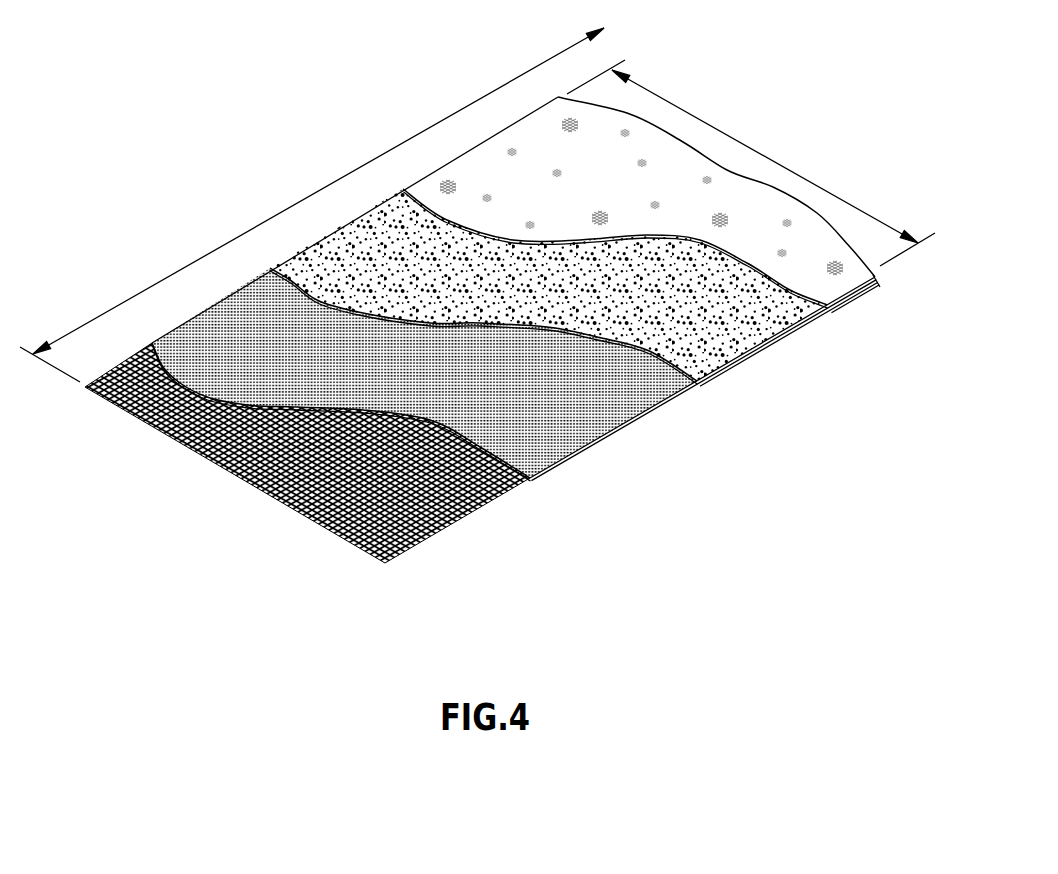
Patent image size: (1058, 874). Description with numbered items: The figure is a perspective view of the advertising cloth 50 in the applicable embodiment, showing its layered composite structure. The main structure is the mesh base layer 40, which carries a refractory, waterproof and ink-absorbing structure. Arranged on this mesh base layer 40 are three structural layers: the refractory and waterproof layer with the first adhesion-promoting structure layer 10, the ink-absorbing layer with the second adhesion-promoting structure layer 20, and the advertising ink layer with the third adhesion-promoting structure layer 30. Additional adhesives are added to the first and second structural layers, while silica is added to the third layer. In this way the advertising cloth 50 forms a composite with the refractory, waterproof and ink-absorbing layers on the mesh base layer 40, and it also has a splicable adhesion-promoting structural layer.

The advertising cloth 50 is at (171, 35).
The first adhesion-promoting structure layer 10 is at (592, 420).
The second adhesion-promoting structure layer 20 is at (740, 338).
The third adhesion-promoting structure layer 30 is at (847, 278).
The mesh base layer 40 is at (452, 510).